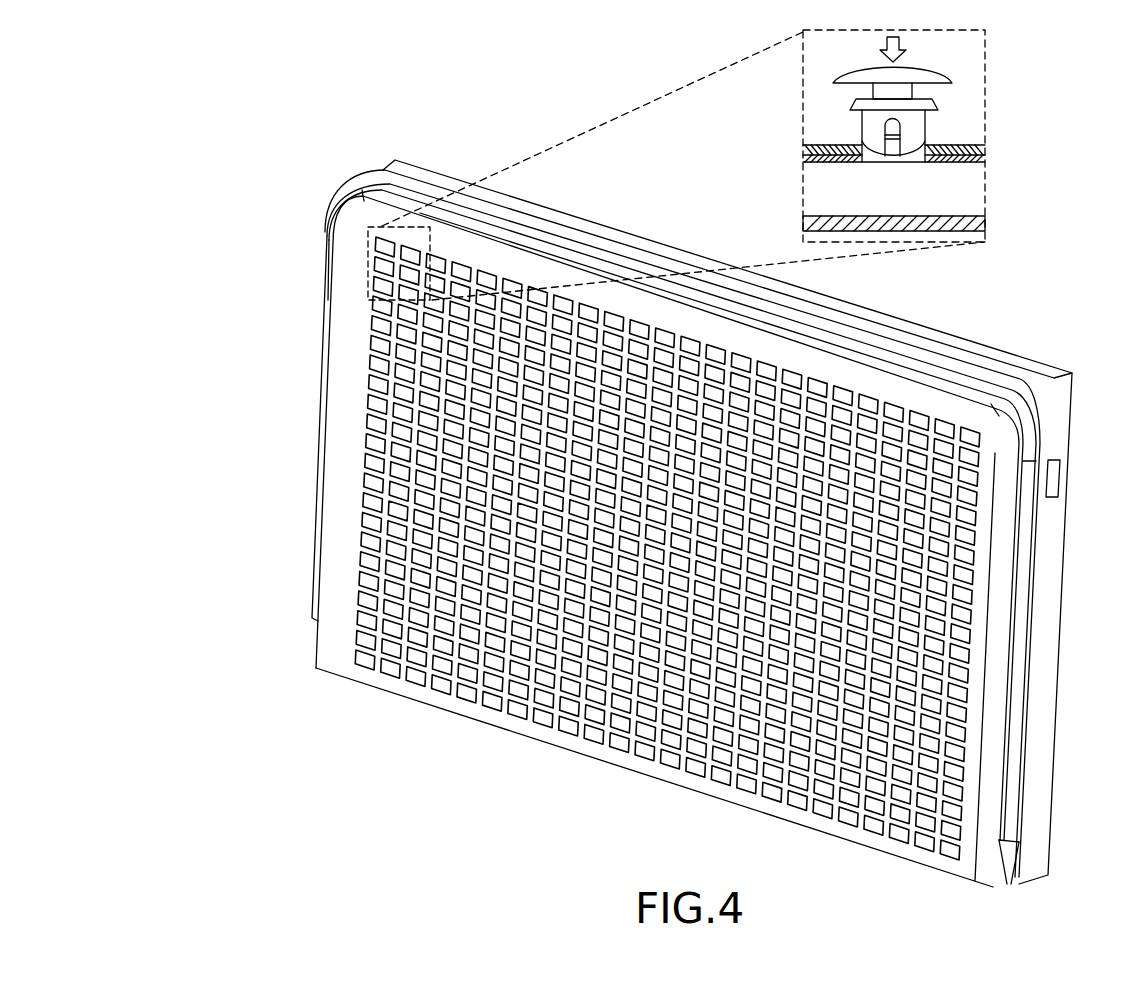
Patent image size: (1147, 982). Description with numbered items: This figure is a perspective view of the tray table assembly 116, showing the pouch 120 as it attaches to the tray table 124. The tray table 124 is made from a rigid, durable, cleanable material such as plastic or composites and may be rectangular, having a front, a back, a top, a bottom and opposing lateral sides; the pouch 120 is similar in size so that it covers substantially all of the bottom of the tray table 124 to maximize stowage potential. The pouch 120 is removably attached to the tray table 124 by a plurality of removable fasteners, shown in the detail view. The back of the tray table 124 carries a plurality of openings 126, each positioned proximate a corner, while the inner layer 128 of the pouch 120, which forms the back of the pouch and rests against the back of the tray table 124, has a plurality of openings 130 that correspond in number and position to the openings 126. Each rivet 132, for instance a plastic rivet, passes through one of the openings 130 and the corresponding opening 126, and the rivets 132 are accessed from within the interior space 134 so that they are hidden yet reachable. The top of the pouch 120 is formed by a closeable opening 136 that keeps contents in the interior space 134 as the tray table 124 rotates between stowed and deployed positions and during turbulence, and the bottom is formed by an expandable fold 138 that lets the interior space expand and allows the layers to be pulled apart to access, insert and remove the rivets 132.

The tray table assembly 116 is at (290, 208).
The pouch 120 is at (318, 428).
The tray table 124 is at (1050, 680).
The openings 126 is at (876, 168).
The inner layer 128 is at (965, 150).
The openings 130 is at (858, 135).
The rivets 132 is at (930, 82).
The interior space 134 is at (822, 48).
The closeable opening 136 is at (1012, 390).
The expandable fold 138 is at (1010, 884).